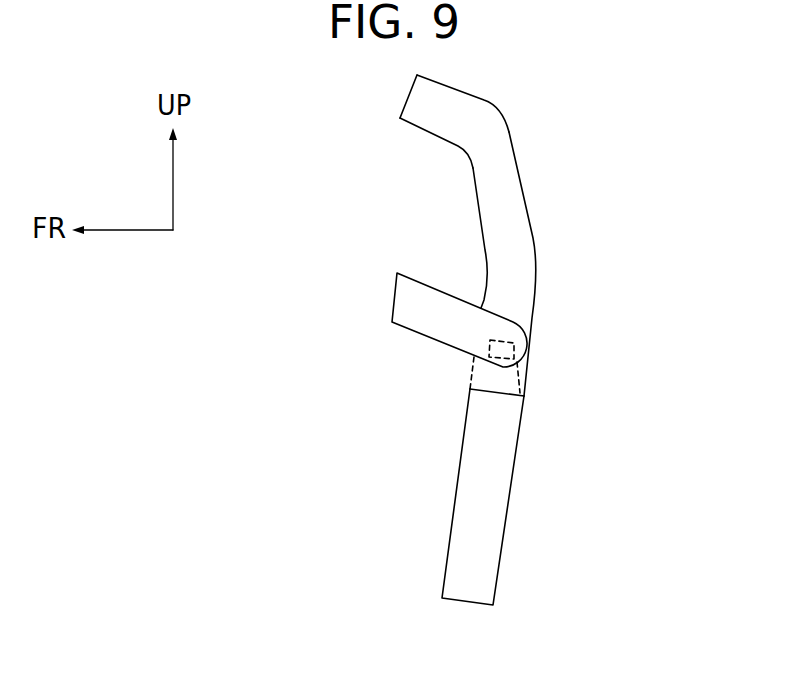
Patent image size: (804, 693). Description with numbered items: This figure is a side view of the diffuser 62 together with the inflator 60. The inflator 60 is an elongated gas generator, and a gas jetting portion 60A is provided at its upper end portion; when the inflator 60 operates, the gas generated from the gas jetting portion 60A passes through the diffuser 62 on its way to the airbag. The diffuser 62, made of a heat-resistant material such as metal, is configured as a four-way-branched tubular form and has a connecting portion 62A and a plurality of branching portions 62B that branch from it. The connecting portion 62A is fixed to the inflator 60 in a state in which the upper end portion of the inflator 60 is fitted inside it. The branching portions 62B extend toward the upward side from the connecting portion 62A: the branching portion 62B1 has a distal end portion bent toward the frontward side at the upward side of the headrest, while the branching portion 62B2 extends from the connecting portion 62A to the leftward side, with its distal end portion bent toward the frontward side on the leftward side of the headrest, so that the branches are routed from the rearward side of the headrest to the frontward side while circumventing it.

The inflator 60 is at (509, 497).
The gas jetting portion 60A is at (470, 375).
The diffuser 62 is at (524, 195).
The connecting portion 62A is at (525, 377).
The branching portions 62B is at (434, 211).
The branching portion 62B1 is at (478, 96).
The branching portion 62B2 is at (394, 298).